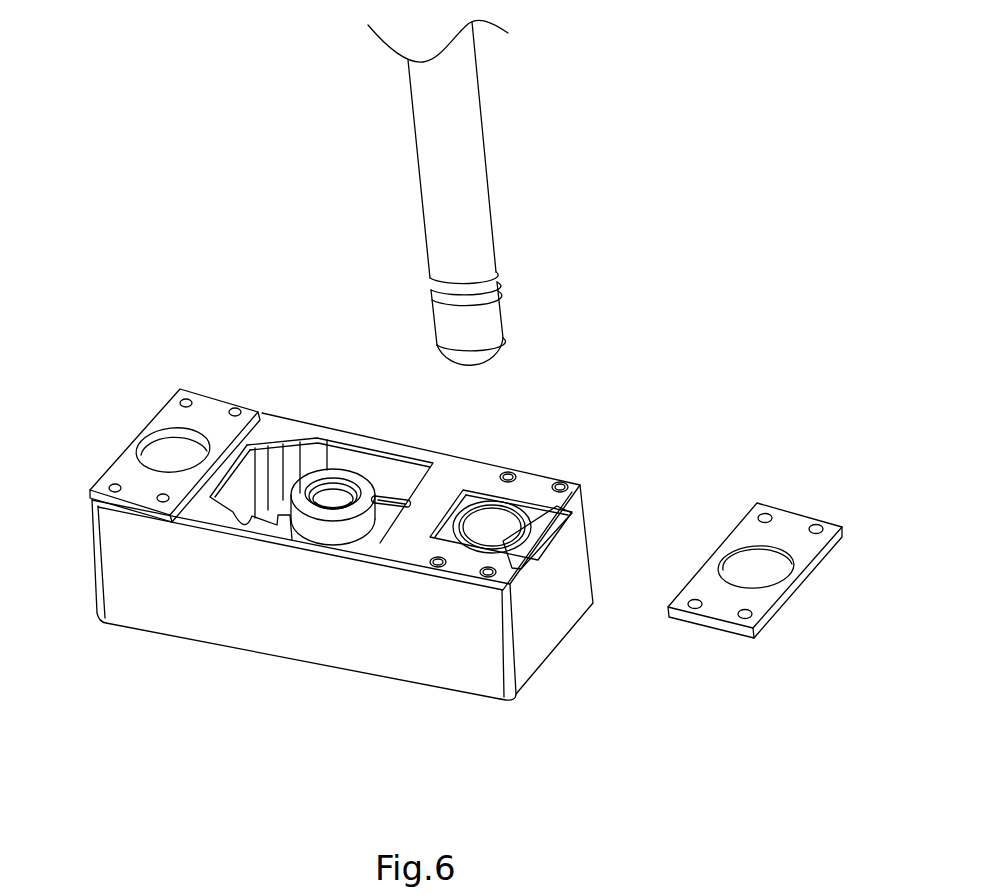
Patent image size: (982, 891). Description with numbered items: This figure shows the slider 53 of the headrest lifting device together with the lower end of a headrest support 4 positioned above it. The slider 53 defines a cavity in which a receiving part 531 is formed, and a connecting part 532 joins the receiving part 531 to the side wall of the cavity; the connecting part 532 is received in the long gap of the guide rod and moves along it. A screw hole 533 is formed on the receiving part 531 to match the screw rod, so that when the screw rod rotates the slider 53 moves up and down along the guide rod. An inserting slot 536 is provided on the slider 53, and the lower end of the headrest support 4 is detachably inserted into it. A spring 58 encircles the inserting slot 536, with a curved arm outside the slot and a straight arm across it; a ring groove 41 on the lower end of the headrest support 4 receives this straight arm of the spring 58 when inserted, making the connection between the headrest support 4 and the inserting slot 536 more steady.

The headrest support 4 is at (476, 132).
The ring groove 41 is at (508, 271).
The slider 53 is at (120, 570).
The receiving part 531 is at (327, 532).
The connecting part 532 is at (400, 490).
The screw hole 533 is at (346, 466).
The inserting slot 536 is at (503, 518).
The spring 58 is at (523, 531).